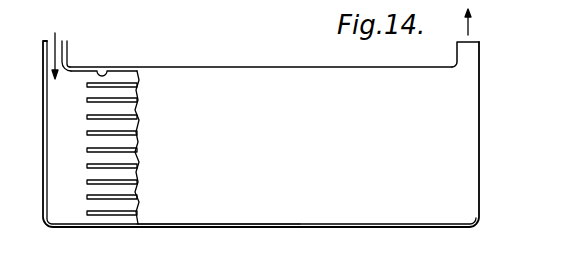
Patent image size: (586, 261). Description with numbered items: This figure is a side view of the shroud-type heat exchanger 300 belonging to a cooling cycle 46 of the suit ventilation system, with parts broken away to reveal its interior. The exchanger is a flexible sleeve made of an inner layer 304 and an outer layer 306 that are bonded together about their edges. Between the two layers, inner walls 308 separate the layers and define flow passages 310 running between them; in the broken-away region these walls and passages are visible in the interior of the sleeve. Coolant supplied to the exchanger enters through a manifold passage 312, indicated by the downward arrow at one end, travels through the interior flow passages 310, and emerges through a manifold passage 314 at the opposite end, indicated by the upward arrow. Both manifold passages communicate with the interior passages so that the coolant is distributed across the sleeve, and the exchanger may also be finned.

The cooling cycle 46 is at (486, 107).
The heat exchanger 300 is at (364, 52).
The inner layer 304 is at (108, 75).
The outer layer 306 is at (267, 75).
The inner walls 308 is at (127, 107).
The flow passages 310 is at (97, 80).
The manifold passage 312 is at (63, 46).
The manifold passage 314 is at (473, 53).